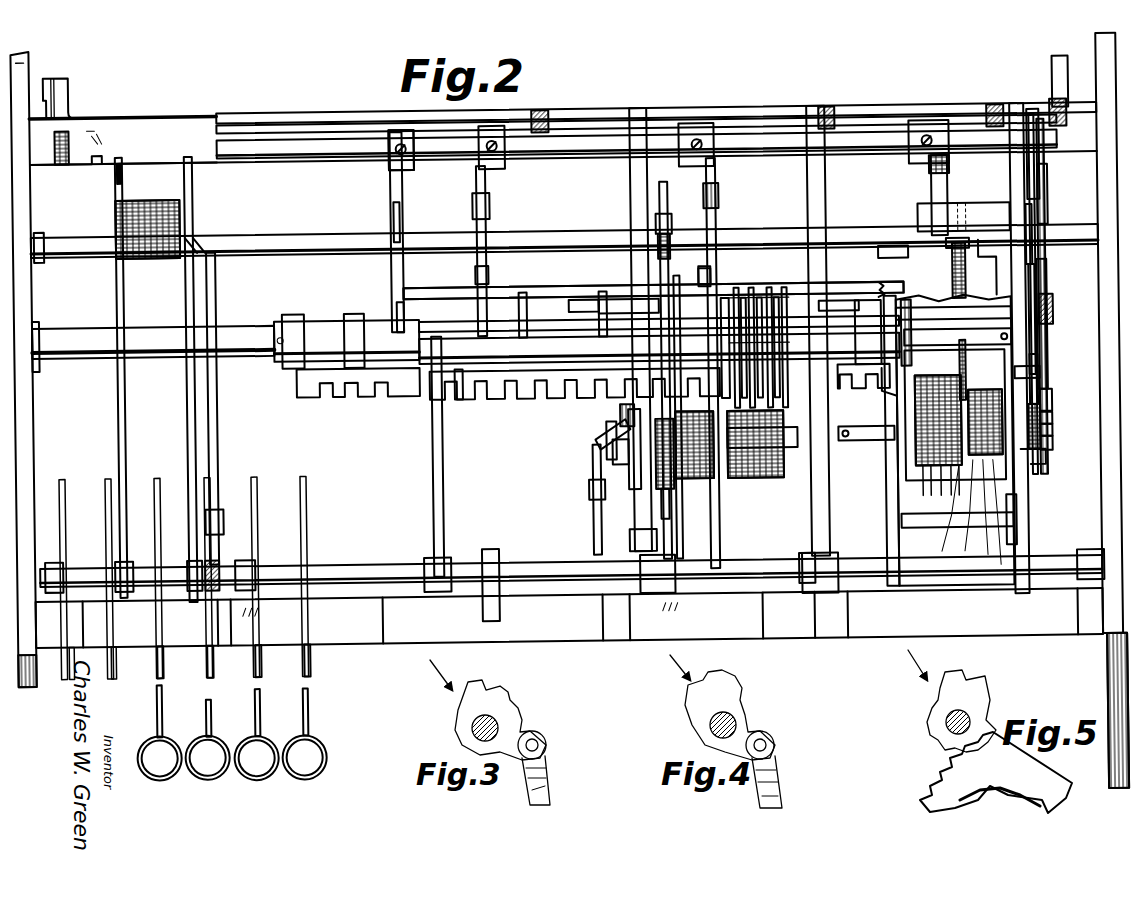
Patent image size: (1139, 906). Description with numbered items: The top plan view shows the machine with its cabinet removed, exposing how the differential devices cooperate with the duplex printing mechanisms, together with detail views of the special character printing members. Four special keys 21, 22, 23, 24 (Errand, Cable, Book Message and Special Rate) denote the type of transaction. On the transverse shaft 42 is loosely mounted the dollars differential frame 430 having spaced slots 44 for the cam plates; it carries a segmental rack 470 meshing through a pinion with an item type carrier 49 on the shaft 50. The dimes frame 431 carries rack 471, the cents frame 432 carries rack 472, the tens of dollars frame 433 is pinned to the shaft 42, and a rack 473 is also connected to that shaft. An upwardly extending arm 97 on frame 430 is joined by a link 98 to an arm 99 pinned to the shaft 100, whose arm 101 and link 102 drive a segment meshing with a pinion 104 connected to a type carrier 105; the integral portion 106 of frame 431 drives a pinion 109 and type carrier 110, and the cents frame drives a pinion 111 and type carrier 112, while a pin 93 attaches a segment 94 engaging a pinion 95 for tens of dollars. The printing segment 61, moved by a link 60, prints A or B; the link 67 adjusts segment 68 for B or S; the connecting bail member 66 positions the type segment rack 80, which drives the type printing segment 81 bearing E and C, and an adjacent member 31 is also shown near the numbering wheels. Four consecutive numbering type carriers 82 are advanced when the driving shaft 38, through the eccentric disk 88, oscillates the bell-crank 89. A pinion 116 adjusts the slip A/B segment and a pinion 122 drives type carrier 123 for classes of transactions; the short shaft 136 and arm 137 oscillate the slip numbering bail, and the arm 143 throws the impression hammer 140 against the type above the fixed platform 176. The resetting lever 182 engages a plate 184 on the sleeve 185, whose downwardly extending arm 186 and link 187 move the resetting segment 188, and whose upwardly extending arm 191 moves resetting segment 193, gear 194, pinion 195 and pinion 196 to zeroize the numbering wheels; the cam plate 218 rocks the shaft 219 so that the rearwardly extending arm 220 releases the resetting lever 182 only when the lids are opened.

In FIG. 2, the Errand key 21 is at (157, 775).
In FIG. 2, the Cable key 22 is at (206, 775).
In FIG. 2, the Book Message key 23 is at (255, 776).
In FIG. 2, the Special Rate key 24 is at (305, 777).
In FIG. 2, the pawl 31 is at (660, 470).
In FIG. 2, the driving shaft 38 is at (870, 234).
In FIG. 2, the transverse shaft 42 is at (330, 328).
In FIG. 2, the spaced slots 44 is at (522, 392).
In FIG. 2, the item type carrier 49 is at (758, 482).
In FIG. 2, the shaft 50 is at (833, 452).
In FIG. 3, the shaft 50 is at (472, 728).
In FIG. 4, the shaft 50 is at (732, 722).
In FIG. 5, the shaft 50 is at (946, 728).
In FIG. 2, the link 60 is at (670, 512).
In FIG. 4, the link 60 is at (775, 783).
In FIG. 2, the printing segment 61 is at (660, 478).
In FIG. 4, the printing segment 61 is at (715, 706).
In FIG. 2, the connecting bail member 66 is at (599, 550).
In FIG. 2, the link 67 is at (626, 460).
In FIG. 3, the link 67 is at (543, 775).
In FIG. 2, the type printing segment 68 is at (602, 478).
In FIG. 3, the type printing segment 68 is at (500, 716).
In FIG. 5, the type segment rack 80 is at (996, 772).
In FIG. 5, the type printing segment 81 is at (961, 711).
In FIG. 2, the consecutive numbering type carriers 82 is at (690, 482).
In FIG. 2, the eccentrically mounted disk 88 is at (665, 216).
In FIG. 2, the bell-crank 89 is at (672, 281).
In FIG. 2, the pin 93 is at (402, 228).
In FIG. 2, the segment 94 is at (1050, 310).
In FIG. 2, the pinion 95 is at (1052, 440).
In FIG. 2, the upwardly extending arm 97 is at (393, 312).
In FIG. 2, the link 98 is at (968, 482).
In FIG. 2, the forwardly extending arm 99 is at (398, 192).
In FIG. 2, the shaft 100 is at (418, 170).
In FIG. 2, the arm 101 is at (1045, 172).
In FIG. 2, the link 102 is at (1052, 218).
In FIG. 2, the pinion 104 is at (1052, 428).
In FIG. 2, the type carrier 105 is at (964, 515).
In FIG. 2, the integral portion 106 is at (875, 284).
In FIG. 2, the pinion 109 is at (1052, 416).
In FIG. 2, the type carrier 110 is at (987, 516).
In FIG. 2, the pinion 111 is at (1035, 422).
In FIG. 2, the type carrier 112 is at (1000, 521).
In FIG. 2, the pinion 116 is at (1050, 460).
In FIG. 2, the pinion 122 is at (1052, 452).
In FIG. 2, the type carrier 123 is at (938, 518).
In FIG. 2, the short shaft 136 is at (938, 345).
In FIG. 2, the arm 137 is at (895, 385).
In FIG. 2, the impression hammer 140 is at (954, 280).
In FIG. 2, the arm 143 is at (932, 194).
In FIG. 2, the fixed platform 176 is at (890, 508).
In FIG. 2, the resetting lever 182 is at (487, 275).
In FIG. 2, the plate 184 is at (489, 197).
In FIG. 2, the sleeve 185 is at (572, 150).
In FIG. 2, the downwardly extending arm 186 is at (730, 120).
In FIG. 2, the link 187 is at (720, 190).
In FIG. 2, the resetting segment 188 is at (722, 284).
In FIG. 2, the upwardly extending arm 191 is at (1040, 202).
In FIG. 2, the resetting segment 193 is at (1038, 276).
In FIG. 2, the gear 194 is at (1040, 378).
In FIG. 2, the pinion 195 is at (960, 372).
In FIG. 2, the pinion 196 is at (955, 485).
In FIG. 2, the cam plate 218 is at (498, 598).
In FIG. 2, the shaft 219 is at (526, 562).
In FIG. 2, the rearwardly extending arm 220 is at (443, 445).
In FIG. 2, the differential frame 430 is at (485, 396).
In FIG. 2, the differential frame 431 is at (782, 272).
In FIG. 2, the cents differential frame 432 is at (866, 392).
In FIG. 2, the differential frame 433 is at (342, 394).
In FIG. 2, the segmental rack 470 is at (736, 386).
In FIG. 2, the segmental rack 471 is at (766, 386).
In FIG. 2, the segmental rack 472 is at (790, 390).
In FIG. 2, the segmental rack 473 is at (713, 350).